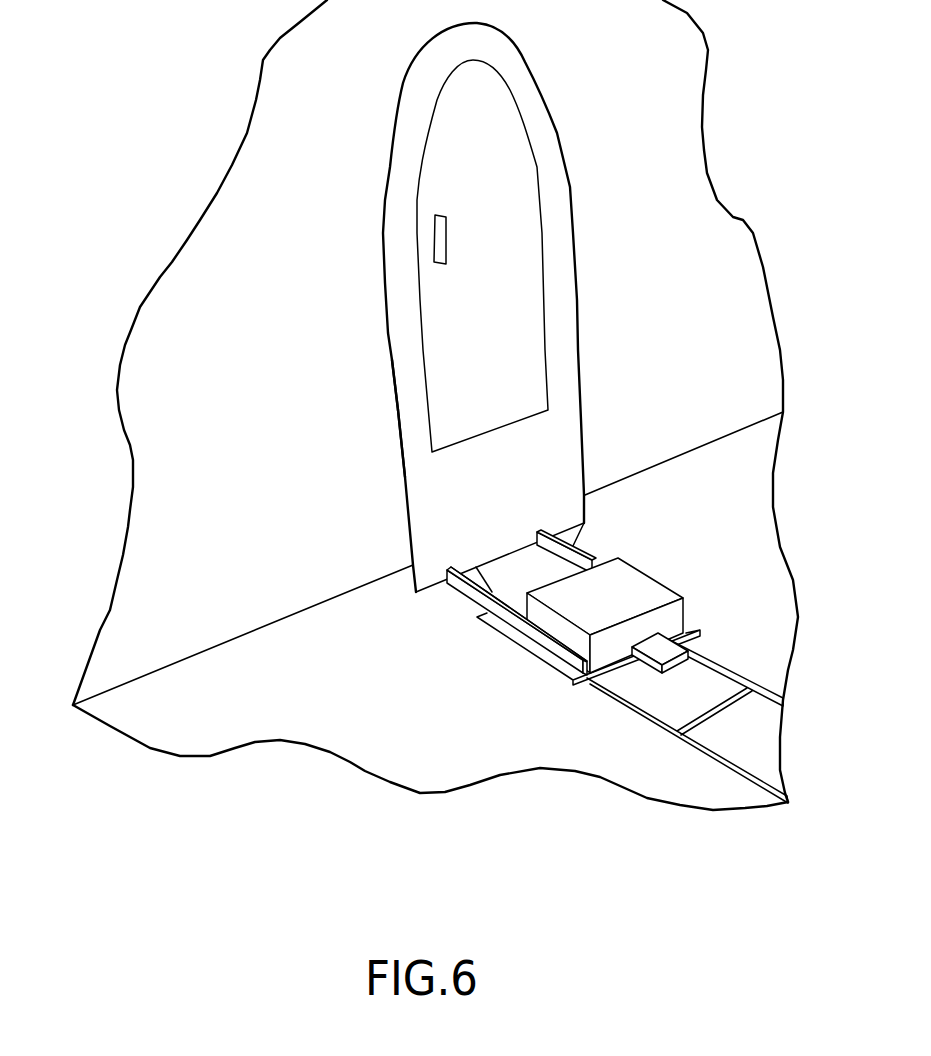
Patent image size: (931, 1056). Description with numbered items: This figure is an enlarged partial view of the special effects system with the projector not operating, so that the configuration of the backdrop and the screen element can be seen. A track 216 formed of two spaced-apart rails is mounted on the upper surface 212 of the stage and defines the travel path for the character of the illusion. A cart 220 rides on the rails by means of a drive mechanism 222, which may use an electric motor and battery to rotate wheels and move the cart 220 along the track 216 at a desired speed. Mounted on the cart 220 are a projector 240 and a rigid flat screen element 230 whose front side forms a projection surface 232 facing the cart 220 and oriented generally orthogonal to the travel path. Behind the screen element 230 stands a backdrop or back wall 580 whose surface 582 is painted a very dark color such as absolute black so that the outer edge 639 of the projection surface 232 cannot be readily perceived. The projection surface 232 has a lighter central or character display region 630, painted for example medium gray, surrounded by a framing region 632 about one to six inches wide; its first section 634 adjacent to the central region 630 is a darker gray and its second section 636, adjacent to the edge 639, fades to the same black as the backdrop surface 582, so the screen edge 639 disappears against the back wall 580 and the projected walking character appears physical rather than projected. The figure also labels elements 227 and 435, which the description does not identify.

The upper surface 212 is at (366, 731).
The track 216 is at (756, 661).
The cart 220 is at (512, 686).
The drive mechanism 222 is at (569, 701).
The sled plate 227 is at (468, 596).
The screen element 230 is at (610, 499).
The projection surface 232 is at (566, 507).
The projector 240 is at (673, 570).
The rail lip 435 is at (520, 610).
The backdrop 580 is at (162, 692).
The surface 582 is at (195, 632).
The central display region 630 is at (496, 234).
The framing region 632 is at (454, 384).
The first section 634 is at (410, 415).
The second section 636 is at (407, 330).
The edge 639 is at (402, 477).